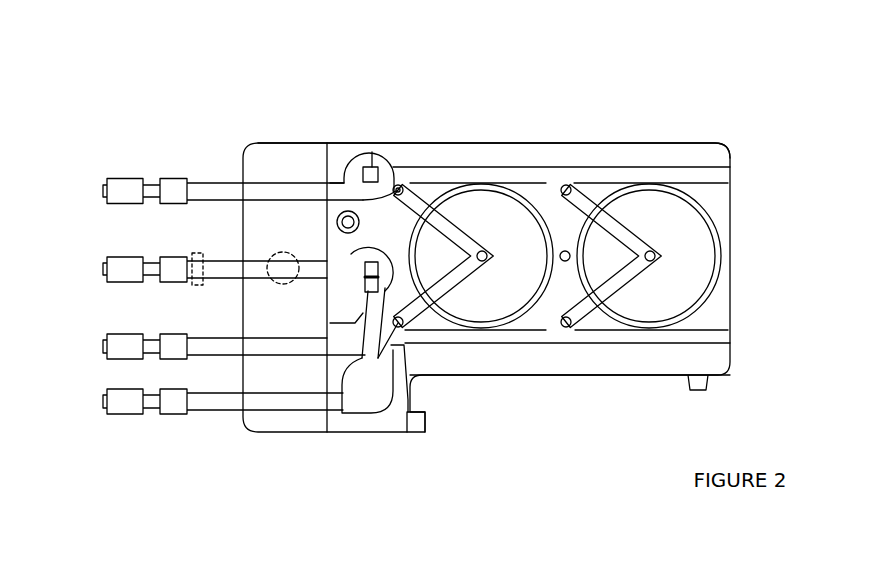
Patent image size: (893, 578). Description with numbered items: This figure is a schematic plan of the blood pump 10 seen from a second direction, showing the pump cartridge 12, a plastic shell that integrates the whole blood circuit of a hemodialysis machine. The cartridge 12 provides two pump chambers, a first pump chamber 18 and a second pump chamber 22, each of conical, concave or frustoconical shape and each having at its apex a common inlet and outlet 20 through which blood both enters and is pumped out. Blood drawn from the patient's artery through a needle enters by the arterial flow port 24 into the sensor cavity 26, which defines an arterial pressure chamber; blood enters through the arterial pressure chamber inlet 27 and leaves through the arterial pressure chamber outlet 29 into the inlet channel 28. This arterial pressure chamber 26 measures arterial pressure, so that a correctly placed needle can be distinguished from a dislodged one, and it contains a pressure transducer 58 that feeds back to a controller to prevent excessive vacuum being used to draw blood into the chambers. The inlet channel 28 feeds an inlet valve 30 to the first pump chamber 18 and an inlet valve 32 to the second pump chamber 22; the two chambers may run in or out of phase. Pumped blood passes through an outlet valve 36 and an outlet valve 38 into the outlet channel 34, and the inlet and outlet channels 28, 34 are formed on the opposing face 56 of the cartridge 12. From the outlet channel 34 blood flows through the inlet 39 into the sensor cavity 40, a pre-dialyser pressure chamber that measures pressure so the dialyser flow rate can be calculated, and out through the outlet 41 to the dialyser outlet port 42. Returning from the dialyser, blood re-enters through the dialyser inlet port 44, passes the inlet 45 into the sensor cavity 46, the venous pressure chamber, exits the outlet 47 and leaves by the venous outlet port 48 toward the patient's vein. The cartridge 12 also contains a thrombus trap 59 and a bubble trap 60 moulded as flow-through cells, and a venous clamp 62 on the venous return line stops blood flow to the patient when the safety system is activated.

The blood pump 10 is at (743, 240).
The pump cartridge 12 is at (652, 142).
The pump chamber 18 is at (503, 290).
The common inlet and outlet 20 is at (654, 253).
The second pump chamber 22 is at (685, 273).
The arterial flow port 24 is at (125, 190).
The sensor cavity (arterial pressure chamber) 26 is at (362, 168).
The arterial pressure chamber inlet 27 is at (340, 193).
The inlet channel 28 is at (493, 177).
The arterial pressure chamber outlet 29 is at (396, 168).
The inlet valve 30 is at (402, 184).
The inlet valve 32 is at (565, 185).
The outlet channel 34 is at (602, 335).
The outlet valve 36 is at (400, 326).
The outlet valve 38 is at (567, 327).
The inlet 39 is at (397, 382).
The sensor cavity (pre-dialyser pressure chamber) 40 is at (358, 397).
The outlet 41 is at (333, 405).
The dialyser outlet port 42 is at (122, 407).
The dialyser inlet port 44 is at (117, 342).
The inlet 45 is at (363, 313).
The sensor cavity (venous pressure chamber) 46 is at (360, 278).
The outlet 47 is at (351, 254).
The venous outlet port 48 is at (118, 268).
The opposing face 56 is at (703, 148).
The pressure transducer 58 is at (366, 166).
The thrombus trap 59 is at (362, 276).
The bubble trap 60 is at (273, 267).
The venous clamp 62 is at (192, 282).